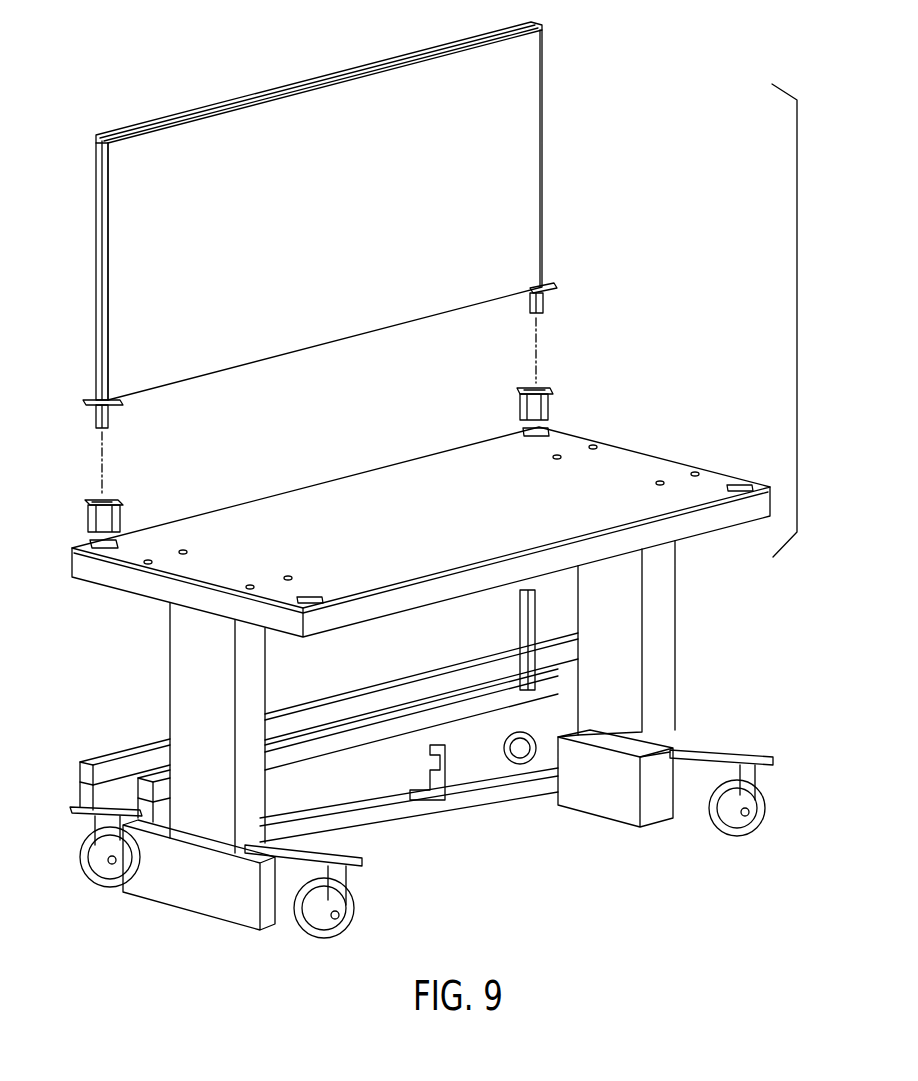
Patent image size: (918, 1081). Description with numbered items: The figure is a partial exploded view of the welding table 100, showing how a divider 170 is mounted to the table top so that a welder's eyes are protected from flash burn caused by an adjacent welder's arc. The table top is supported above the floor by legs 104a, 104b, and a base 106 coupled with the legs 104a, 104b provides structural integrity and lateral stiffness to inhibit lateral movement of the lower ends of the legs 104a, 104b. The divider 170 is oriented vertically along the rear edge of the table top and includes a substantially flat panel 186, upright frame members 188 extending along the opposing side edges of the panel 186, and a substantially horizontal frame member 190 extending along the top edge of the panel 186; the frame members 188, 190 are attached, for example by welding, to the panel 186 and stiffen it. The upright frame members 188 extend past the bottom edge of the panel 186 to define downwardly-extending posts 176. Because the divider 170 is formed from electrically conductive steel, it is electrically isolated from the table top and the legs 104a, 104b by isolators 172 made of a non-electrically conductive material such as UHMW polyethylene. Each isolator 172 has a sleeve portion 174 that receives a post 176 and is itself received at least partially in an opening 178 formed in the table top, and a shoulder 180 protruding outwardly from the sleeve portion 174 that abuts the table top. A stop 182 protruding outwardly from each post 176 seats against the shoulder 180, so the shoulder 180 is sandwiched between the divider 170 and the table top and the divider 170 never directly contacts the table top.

The welding table 100 is at (610, 34).
The leg 104a is at (182, 688).
The leg 104b is at (660, 640).
The base 106 is at (350, 670).
The divider 170 is at (338, 219).
The isolator 172 is at (363, 425).
The sleeve portion 174 is at (120, 512).
The post 176 is at (112, 414).
The opening 178 is at (96, 549).
The shoulder 180 is at (110, 498).
The stop 182 is at (92, 400).
The panel 186 is at (527, 114).
The upright frame member 188 is at (105, 215).
The horizontal frame member 190 is at (250, 98).